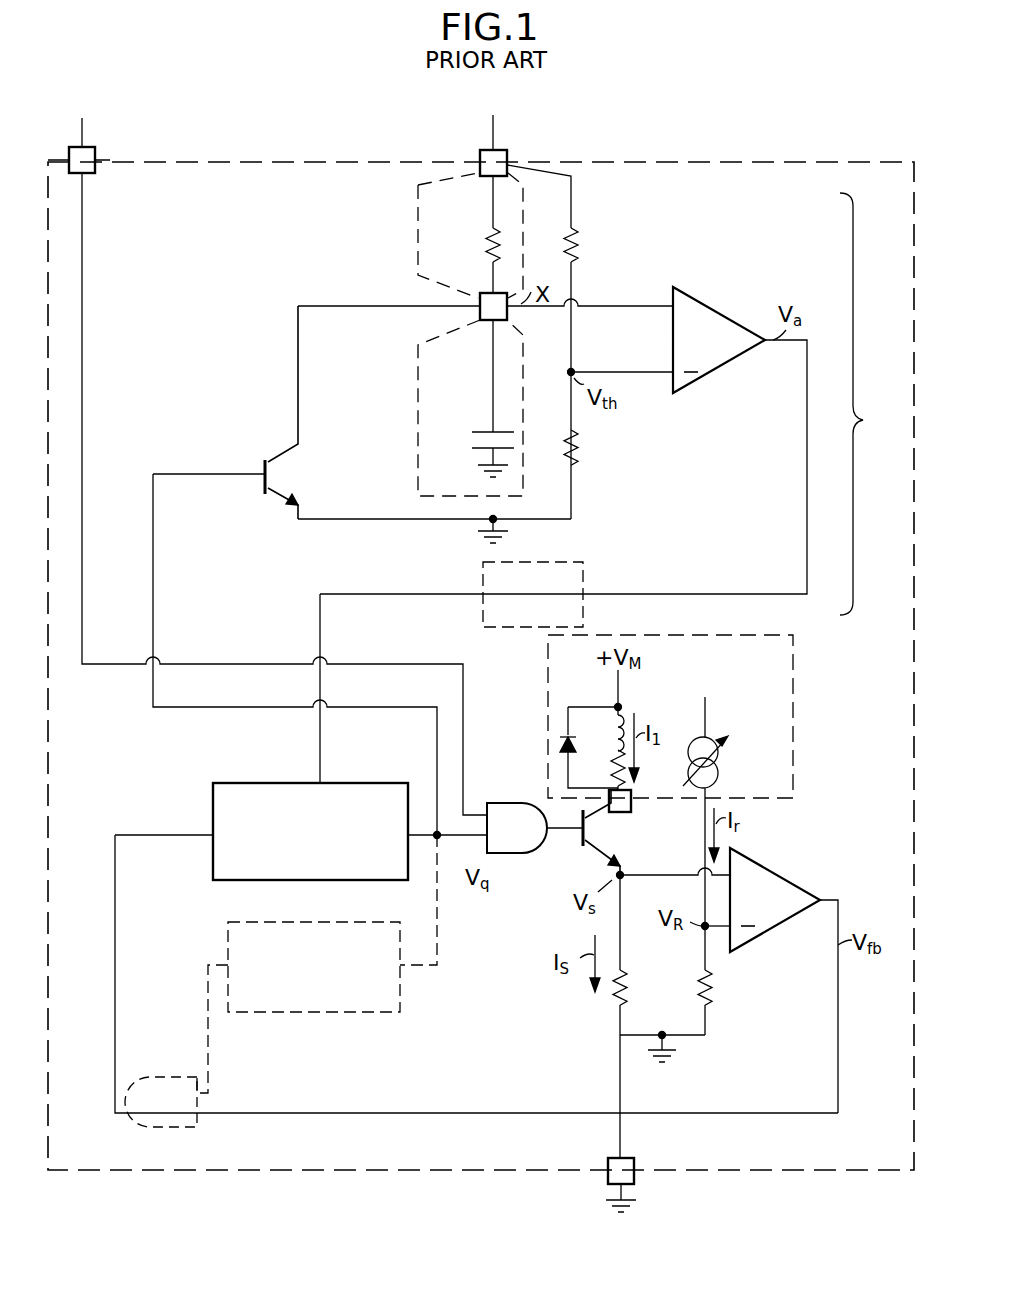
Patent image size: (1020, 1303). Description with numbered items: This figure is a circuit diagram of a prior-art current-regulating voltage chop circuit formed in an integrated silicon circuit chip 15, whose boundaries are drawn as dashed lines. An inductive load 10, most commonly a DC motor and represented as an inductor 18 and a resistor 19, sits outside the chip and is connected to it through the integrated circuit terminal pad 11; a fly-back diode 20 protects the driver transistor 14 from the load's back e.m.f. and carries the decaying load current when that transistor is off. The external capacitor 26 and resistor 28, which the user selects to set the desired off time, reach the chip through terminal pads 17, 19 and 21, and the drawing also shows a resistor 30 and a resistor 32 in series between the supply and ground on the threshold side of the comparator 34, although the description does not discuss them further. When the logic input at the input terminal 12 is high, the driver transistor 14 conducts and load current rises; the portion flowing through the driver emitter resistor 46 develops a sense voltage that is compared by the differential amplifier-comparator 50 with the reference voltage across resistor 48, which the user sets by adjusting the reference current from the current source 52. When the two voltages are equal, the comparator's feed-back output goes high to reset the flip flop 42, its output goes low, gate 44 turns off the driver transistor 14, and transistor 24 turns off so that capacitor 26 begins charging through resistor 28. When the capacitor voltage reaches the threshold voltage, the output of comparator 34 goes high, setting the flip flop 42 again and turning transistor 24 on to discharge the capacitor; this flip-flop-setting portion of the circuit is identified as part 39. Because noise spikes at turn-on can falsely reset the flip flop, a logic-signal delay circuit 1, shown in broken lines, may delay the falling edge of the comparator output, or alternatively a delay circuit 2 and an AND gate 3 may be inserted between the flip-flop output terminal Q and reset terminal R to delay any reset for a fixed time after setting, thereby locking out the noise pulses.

The logic-signal delay circuit 1 is at (583, 586).
The delay circuit 2 is at (402, 988).
The AND gate 3 is at (172, 1076).
The inductive load 10 is at (556, 727).
The integrated circuit terminal pad 11 is at (631, 810).
The input terminal 12 is at (95, 157).
The driver transistor 14 is at (582, 842).
The integrated silicon circuit chip 15 is at (253, 162).
The terminal pad 17 is at (507, 158).
The inductor 18 is at (614, 734).
The resistor 19 is at (482, 296).
The fly-back diode 20 is at (561, 747).
The terminal pad 21 is at (634, 1162).
The transistor 24 is at (272, 474).
The capacitor 26 is at (470, 436).
The resistor 28 is at (482, 250).
The divider resistor 30 is at (580, 250).
The divider resistor 32 is at (580, 458).
The comparator 34 is at (726, 353).
The flip-flop-setting circuit 39 is at (868, 404).
The flip flop 42 is at (324, 872).
The gate 44 is at (527, 842).
The driver emitter resistor 46 is at (628, 995).
The resistor 48 is at (713, 995).
The differential amplifier-comparator 50 is at (780, 912).
The current source 52 is at (718, 766).